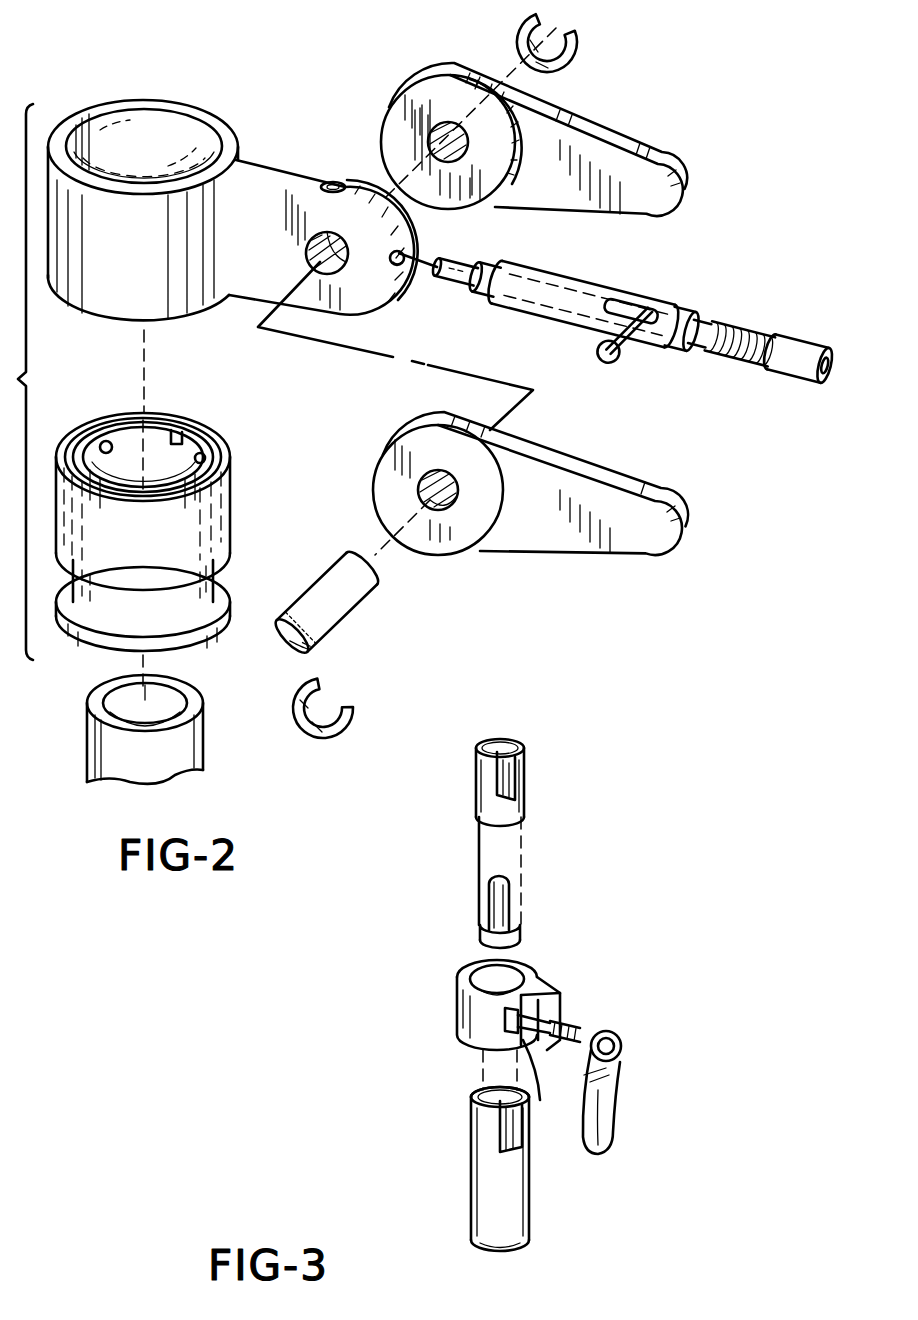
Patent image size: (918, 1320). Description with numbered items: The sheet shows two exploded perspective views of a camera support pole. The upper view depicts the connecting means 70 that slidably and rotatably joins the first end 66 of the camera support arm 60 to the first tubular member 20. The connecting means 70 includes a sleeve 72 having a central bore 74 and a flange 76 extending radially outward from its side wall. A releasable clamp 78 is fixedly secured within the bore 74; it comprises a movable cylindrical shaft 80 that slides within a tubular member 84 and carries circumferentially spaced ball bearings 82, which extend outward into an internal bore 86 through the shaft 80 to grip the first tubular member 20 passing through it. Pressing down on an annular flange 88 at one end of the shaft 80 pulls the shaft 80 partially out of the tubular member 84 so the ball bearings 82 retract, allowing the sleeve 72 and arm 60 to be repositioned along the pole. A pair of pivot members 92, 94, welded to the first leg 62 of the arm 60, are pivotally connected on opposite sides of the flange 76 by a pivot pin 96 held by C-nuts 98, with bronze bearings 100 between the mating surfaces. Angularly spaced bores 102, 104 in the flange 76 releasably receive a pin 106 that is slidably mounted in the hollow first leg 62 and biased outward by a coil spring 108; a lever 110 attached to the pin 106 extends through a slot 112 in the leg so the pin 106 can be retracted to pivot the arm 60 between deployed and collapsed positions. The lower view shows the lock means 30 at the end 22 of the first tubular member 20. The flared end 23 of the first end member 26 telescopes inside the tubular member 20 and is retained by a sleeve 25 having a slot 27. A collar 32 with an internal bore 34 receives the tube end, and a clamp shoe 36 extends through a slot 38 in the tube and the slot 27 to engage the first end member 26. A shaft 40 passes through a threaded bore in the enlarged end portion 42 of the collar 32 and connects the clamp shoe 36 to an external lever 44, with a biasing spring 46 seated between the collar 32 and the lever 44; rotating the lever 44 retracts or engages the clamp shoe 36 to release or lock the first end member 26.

In FIG. 2, the first tubular member 20 is at (100, 738).
In FIG. 3, the first tubular member 20 is at (497, 1203).
In FIG. 3, the end of the first tubular member 22 is at (476, 1092).
In FIG. 3, the flared end 23 is at (482, 936).
In FIG. 3, the sleeve 25 is at (530, 810).
In FIG. 3, the first end member 26 is at (492, 892).
In FIG. 3, the slot 27 is at (518, 748).
In FIG. 3, the lock means 30 is at (422, 964).
In FIG. 3, the collar 32 is at (533, 980).
In FIG. 3, the internal bore 34 is at (522, 968).
In FIG. 3, the clamp shoe 36 is at (546, 1067).
In FIG. 3, the slot 38 is at (502, 1130).
In FIG. 3, the shaft 40 is at (560, 1018).
In FIG. 3, the enlarged end portion 42 is at (552, 994).
In FIG. 3, the lever 44 is at (603, 1127).
In FIG. 3, the biasing spring 46 is at (583, 1024).
In FIG. 2, the arm 60 is at (723, 297).
In FIG. 2, the first leg 62 is at (790, 330).
In FIG. 2, the first end 66 is at (489, 300).
In FIG. 2, the connecting means 70 is at (16, 382).
In FIG. 2, the sleeve 72 is at (113, 103).
In FIG. 2, the central bore 74 is at (168, 120).
In FIG. 2, the flange 76 is at (243, 190).
In FIG. 2, the releasable clamp 78 is at (178, 547).
In FIG. 2, the shaft 80 is at (192, 597).
In FIG. 2, the ball bearings 82 is at (103, 441).
In FIG. 2, the tubular member 84 is at (213, 503).
In FIG. 2, the internal bore 86 is at (176, 430).
In FIG. 2, the annular flange 88 is at (202, 634).
In FIG. 2, the pivot member 92 is at (640, 172).
In FIG. 2, the pivot member 94 is at (580, 487).
In FIG. 2, the pivot pin 96 is at (366, 583).
In FIG. 2, the C-nuts 98 is at (520, 28).
In FIG. 2, the bronze bearings 100 is at (424, 92).
In FIG. 2, the bore 102 is at (334, 182).
In FIG. 2, the bore 104 is at (399, 266).
In FIG. 2, the pin 106 is at (446, 263).
In FIG. 2, the coil spring 108 is at (734, 357).
In FIG. 2, the lever 110 is at (614, 362).
In FIG. 2, the slot 112 is at (630, 305).